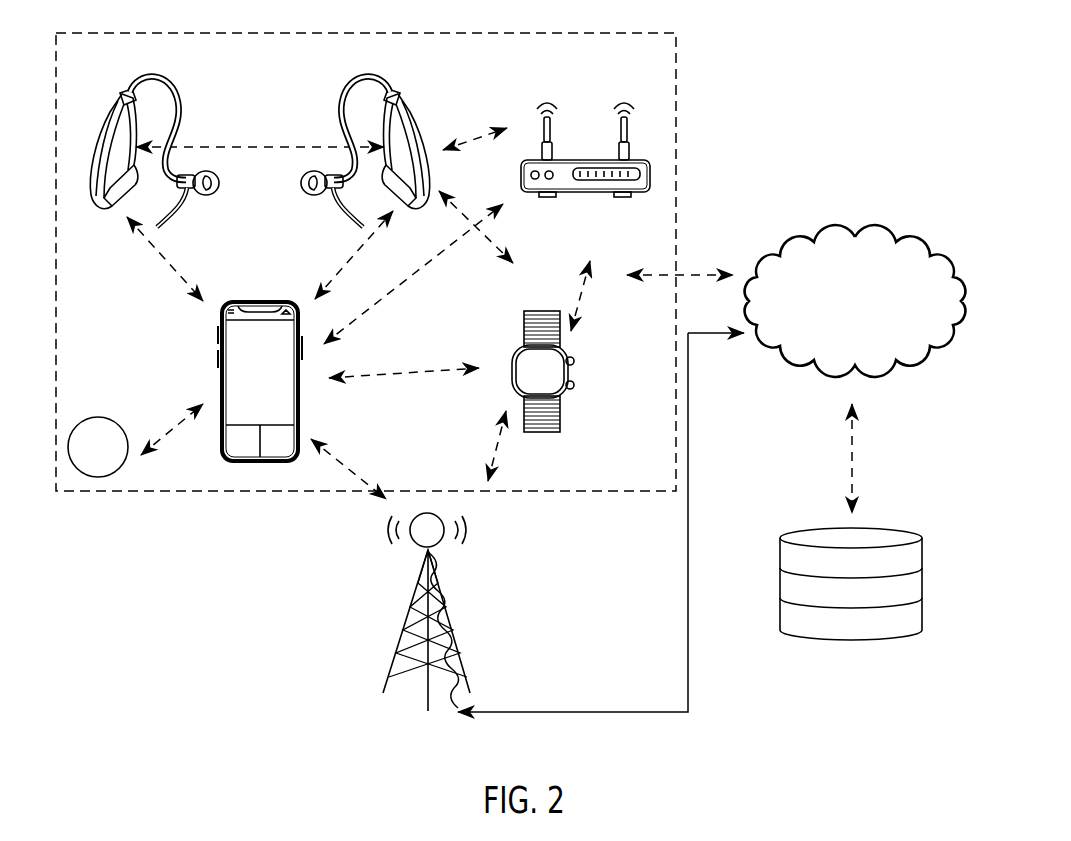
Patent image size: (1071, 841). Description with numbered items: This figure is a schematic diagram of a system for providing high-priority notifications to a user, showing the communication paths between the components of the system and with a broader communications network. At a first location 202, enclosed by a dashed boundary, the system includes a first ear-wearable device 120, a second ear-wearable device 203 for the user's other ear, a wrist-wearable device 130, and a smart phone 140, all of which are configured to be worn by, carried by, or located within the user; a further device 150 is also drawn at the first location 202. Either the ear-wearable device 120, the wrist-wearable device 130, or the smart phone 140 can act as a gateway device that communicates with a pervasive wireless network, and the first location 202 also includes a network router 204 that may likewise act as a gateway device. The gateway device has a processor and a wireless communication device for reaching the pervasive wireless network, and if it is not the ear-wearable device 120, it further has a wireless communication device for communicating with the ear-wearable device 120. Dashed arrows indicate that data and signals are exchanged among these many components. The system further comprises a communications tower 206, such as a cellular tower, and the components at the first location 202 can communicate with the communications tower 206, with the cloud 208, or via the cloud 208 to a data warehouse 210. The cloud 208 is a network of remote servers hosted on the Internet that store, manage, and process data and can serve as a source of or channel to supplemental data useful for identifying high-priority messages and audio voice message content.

The first location 202 is at (568, 33).
The second ear-wearable device 203 is at (108, 95).
The first ear-wearable device 120 is at (421, 96).
The network router 204 is at (570, 197).
The smart phone 140 is at (240, 377).
The other device 150 is at (108, 415).
The wrist-wearable device 130 is at (553, 376).
The cloud 208 is at (870, 309).
The data warehouse 210 is at (792, 528).
The communications tower 206 is at (440, 582).